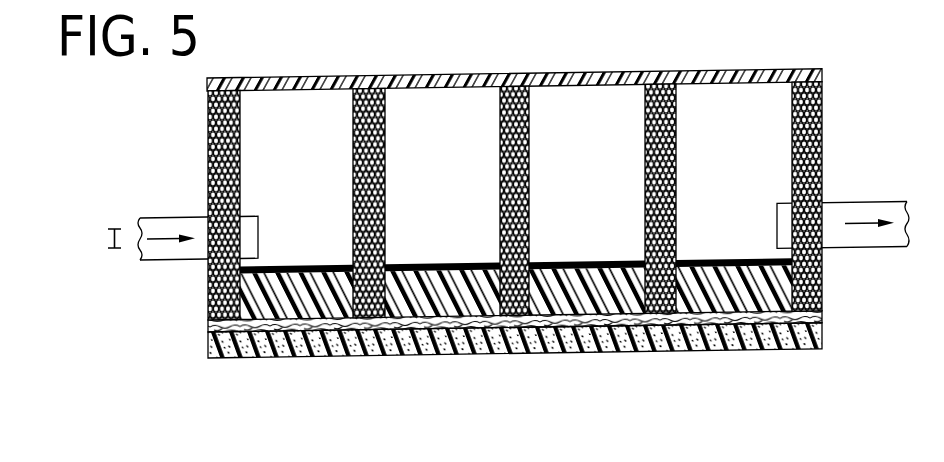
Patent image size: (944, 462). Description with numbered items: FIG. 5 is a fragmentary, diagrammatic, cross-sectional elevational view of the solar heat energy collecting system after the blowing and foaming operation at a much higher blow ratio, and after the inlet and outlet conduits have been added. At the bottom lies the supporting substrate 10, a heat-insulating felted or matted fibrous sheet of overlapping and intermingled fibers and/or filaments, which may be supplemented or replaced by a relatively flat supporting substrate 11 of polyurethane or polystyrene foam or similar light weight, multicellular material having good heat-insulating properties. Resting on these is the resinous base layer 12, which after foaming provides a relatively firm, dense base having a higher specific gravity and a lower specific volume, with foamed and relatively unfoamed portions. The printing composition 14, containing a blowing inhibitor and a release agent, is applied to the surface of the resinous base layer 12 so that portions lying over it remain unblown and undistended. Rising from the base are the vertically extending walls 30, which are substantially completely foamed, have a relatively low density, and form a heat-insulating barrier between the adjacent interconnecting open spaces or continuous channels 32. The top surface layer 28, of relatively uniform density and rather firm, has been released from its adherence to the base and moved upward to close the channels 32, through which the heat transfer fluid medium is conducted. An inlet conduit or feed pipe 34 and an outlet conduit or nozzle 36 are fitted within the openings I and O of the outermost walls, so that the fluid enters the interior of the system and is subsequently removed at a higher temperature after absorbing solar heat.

The supporting substrate 10 is at (823, 318).
The relatively flat supporting substrate 11 is at (213, 347).
The resinous base layer 12 is at (337, 312).
The printing composition 14 is at (296, 268).
The top surface layer 28 is at (257, 78).
The vertically extending walls 30 is at (208, 135).
The continuous channel 32 is at (312, 185).
The inlet conduit 34 is at (160, 255).
The outlet conduit 36 is at (861, 243).